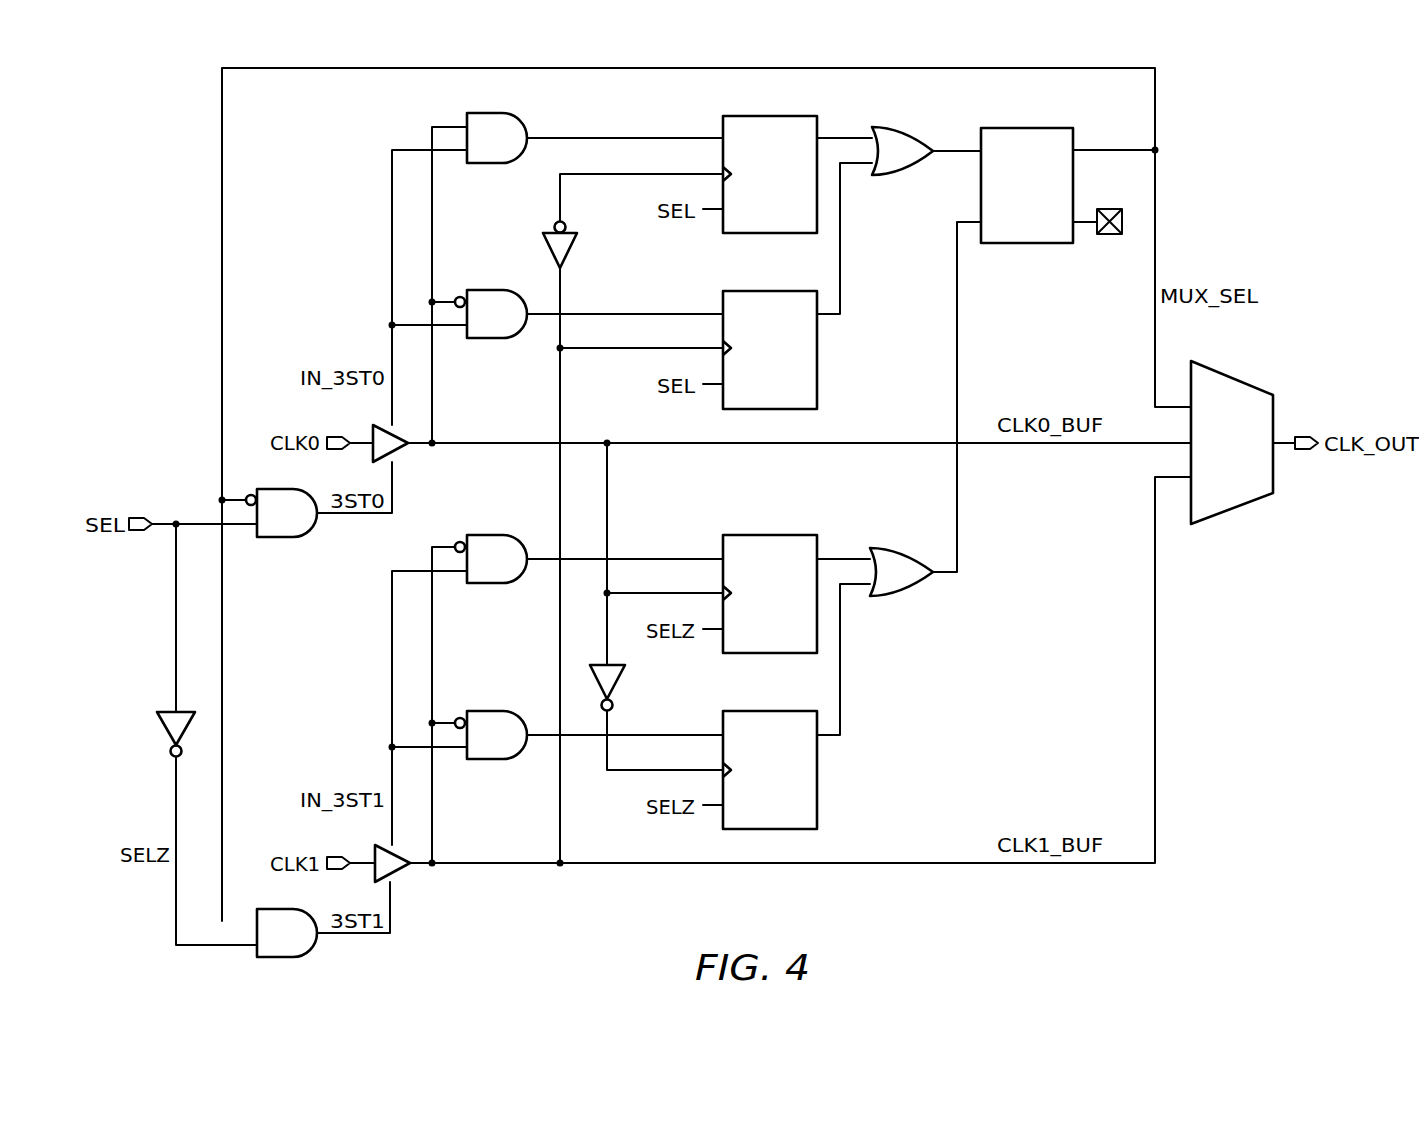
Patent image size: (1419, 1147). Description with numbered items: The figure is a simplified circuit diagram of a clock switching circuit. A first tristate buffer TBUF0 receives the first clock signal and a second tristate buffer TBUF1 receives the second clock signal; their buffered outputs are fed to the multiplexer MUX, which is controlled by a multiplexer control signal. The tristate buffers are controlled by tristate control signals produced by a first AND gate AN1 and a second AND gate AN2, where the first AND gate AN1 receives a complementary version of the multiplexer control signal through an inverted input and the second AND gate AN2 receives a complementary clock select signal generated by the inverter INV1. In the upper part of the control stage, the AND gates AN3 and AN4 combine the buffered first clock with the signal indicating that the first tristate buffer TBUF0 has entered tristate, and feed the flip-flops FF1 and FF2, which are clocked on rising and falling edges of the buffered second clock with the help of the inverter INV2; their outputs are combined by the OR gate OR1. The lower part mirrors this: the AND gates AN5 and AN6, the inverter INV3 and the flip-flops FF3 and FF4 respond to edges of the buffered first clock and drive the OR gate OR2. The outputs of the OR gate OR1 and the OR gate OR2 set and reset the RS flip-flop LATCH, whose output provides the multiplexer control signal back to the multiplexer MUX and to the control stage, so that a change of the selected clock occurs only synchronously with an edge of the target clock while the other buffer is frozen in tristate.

The first AND gate AN1 is at (281, 513).
The second AND gate AN2 is at (287, 933).
The AND gate AN3 is at (497, 138).
The AND gate AN4 is at (491, 314).
The AND gate AN5 is at (491, 559).
The AND gate AN6 is at (491, 735).
The first OR gate OR1 is at (902, 151).
The second OR gate OR2 is at (901, 572).
The inverter INV1 is at (153, 734).
The inverter INV2 is at (586, 245).
The inverter INV3 is at (633, 688).
The first tristate buffer TBUF0 is at (418, 452).
The second tristate buffer TBUF1 is at (419, 873).
The flip-flop FF1 is at (770, 160).
The flip-flop FF2 is at (770, 336).
The flip-flop FF3 is at (770, 580).
The flip-flop FF4 is at (770, 756).
The RS flip-flop LATCH is at (1051, 171).
The multiplexer MUX is at (1232, 442).